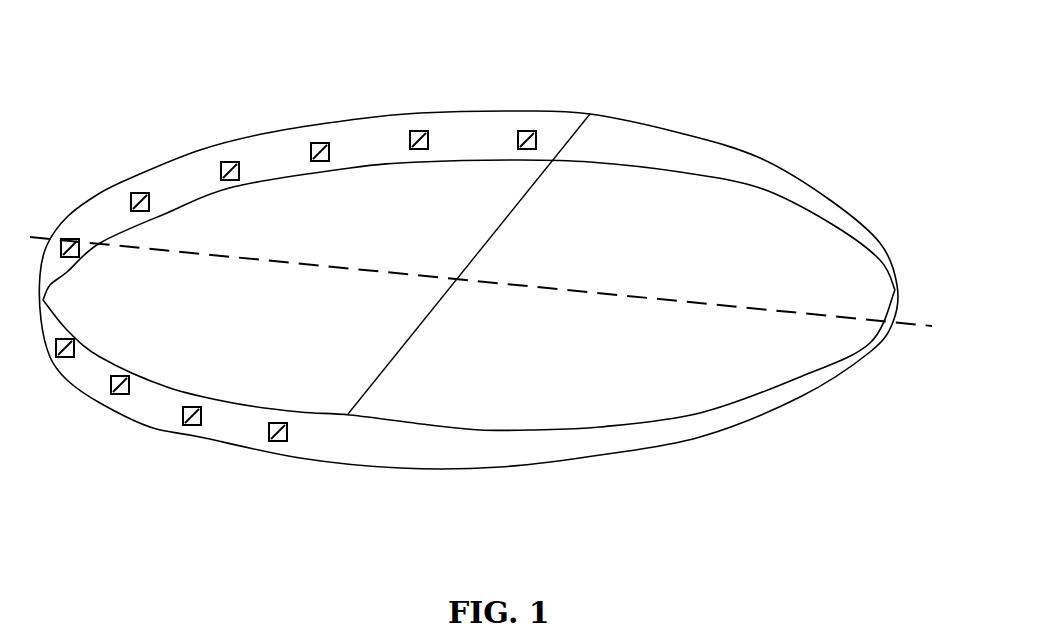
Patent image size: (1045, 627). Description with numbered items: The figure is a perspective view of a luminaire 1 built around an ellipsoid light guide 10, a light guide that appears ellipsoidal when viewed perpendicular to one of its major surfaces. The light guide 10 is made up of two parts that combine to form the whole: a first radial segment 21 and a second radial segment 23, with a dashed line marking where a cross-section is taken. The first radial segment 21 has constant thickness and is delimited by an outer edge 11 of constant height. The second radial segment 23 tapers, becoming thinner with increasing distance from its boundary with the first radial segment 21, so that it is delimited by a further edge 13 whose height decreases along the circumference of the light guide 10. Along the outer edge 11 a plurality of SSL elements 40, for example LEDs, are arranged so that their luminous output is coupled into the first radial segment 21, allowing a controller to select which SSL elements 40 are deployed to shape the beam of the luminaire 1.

The luminaire 1 is at (500, 577).
The ellipsoid light guide 10 is at (345, 466).
The outer edge 11 is at (157, 418).
The further edge 13 is at (724, 418).
The first radial segment 21 is at (443, 205).
The second radial segment 23 is at (688, 212).
The SSL elements 40 is at (275, 441).